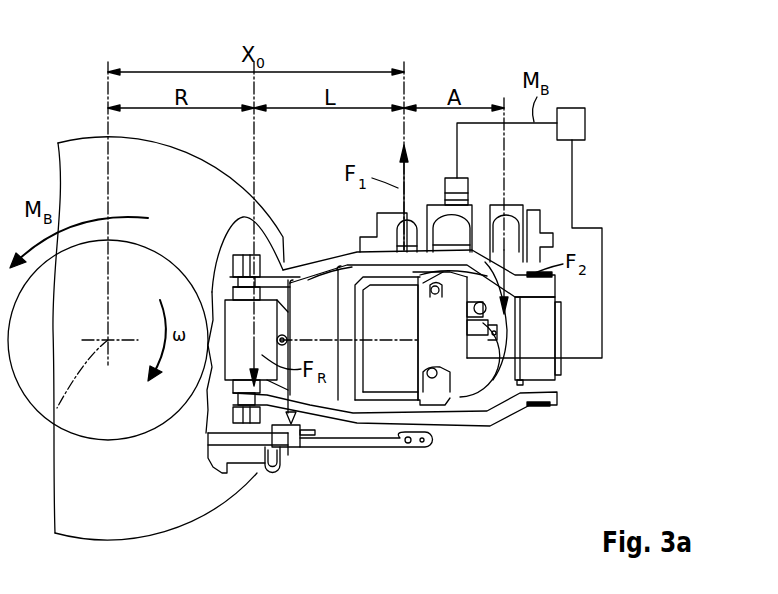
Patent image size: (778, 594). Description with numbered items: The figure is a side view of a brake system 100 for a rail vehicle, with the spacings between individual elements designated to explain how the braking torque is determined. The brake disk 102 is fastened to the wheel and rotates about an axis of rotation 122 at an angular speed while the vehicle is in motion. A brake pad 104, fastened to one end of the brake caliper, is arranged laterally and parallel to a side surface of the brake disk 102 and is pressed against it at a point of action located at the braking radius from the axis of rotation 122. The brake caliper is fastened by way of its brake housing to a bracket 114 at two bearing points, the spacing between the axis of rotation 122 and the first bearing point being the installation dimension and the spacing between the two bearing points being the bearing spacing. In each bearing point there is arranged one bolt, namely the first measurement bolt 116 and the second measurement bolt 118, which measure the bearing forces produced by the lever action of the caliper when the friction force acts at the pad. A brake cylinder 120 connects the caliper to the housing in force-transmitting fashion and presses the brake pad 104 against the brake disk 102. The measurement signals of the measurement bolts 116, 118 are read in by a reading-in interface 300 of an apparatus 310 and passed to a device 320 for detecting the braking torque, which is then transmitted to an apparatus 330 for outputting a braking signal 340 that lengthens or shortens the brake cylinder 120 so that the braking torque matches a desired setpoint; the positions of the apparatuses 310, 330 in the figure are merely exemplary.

The brake system 100 is at (636, 178).
The brake disk 102 is at (214, 487).
The brake pad 104 is at (204, 300).
The bracket 114 is at (498, 225).
The first measurement bolt 116 is at (408, 235).
The second measurement bolt 118 is at (513, 235).
The brake cylinder 120 is at (458, 368).
The axis of rotation 122 is at (56, 409).
The reading-in interface 300 is at (458, 200).
The apparatus 310 is at (478, 176).
The device for detecting the braking torque 320 is at (448, 177).
The apparatus for outputting a braking signal 330 is at (585, 117).
The braking signal 340 is at (603, 290).